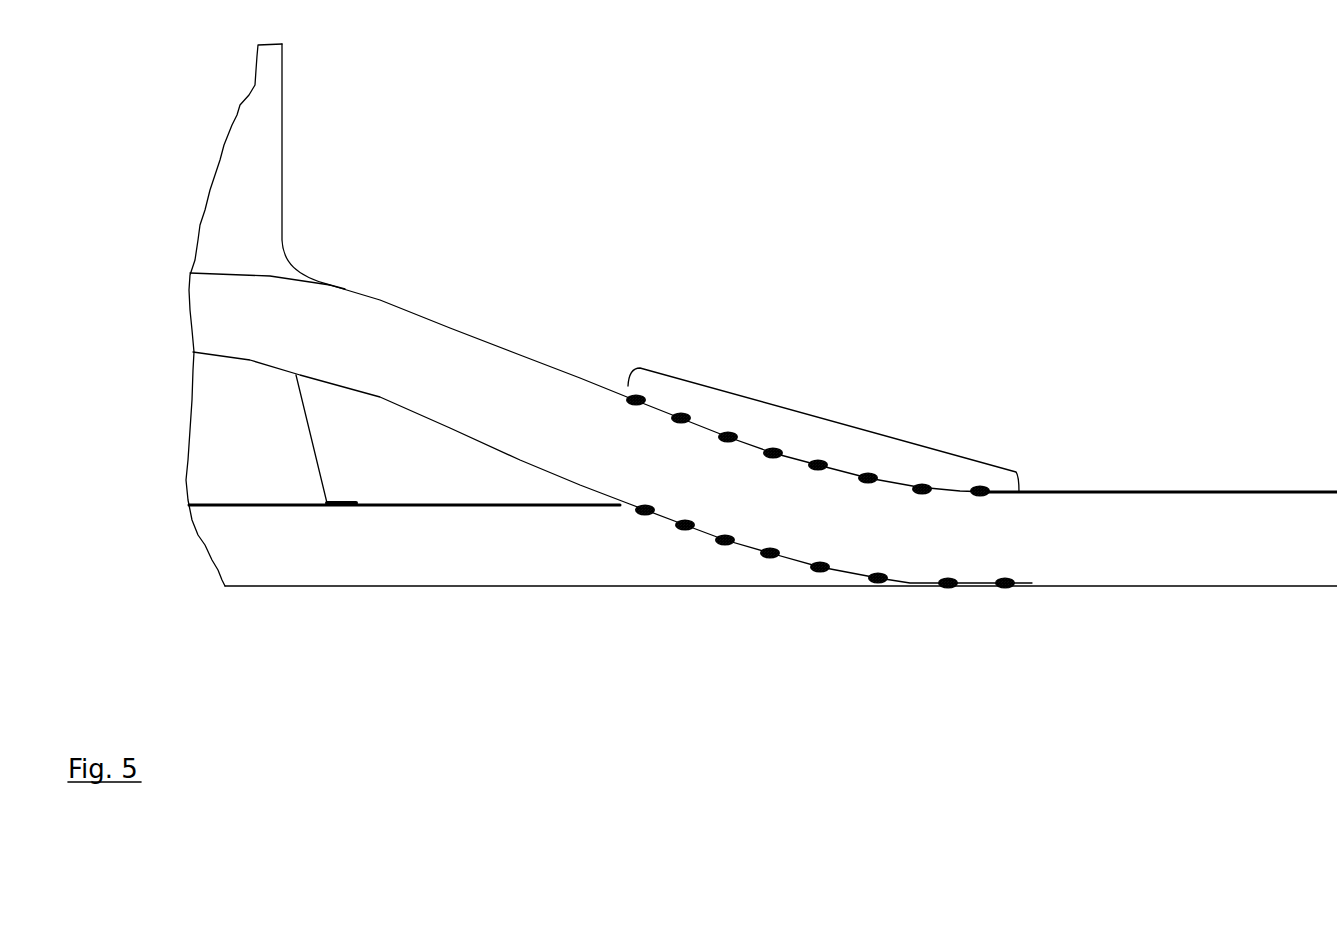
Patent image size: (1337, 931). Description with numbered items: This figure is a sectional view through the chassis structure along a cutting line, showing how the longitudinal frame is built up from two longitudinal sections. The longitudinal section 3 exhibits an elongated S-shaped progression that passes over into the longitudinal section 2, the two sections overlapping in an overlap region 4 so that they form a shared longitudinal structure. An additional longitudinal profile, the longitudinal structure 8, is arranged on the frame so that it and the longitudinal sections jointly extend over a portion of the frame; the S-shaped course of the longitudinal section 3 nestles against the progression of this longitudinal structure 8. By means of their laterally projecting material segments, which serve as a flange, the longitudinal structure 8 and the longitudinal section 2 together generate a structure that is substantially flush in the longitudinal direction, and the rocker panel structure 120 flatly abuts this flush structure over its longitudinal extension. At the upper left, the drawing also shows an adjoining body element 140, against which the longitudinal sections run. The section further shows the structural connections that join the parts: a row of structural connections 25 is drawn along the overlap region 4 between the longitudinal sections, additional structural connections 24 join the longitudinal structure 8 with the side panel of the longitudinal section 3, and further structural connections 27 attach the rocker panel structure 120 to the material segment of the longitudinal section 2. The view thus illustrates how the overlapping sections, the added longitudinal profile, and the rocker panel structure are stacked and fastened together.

The wall panel 140 is at (244, 172).
The longitudinal section 3 is at (488, 322).
The overlap region 4 is at (828, 417).
The upper joints 25 is at (766, 455).
The structural connections 24 is at (727, 538).
The structural connections 27 is at (1016, 623).
The longitudinal section 2 is at (1086, 478).
The longitudinal structure 8 is at (379, 518).
The rocker panel structure 120 is at (750, 586).